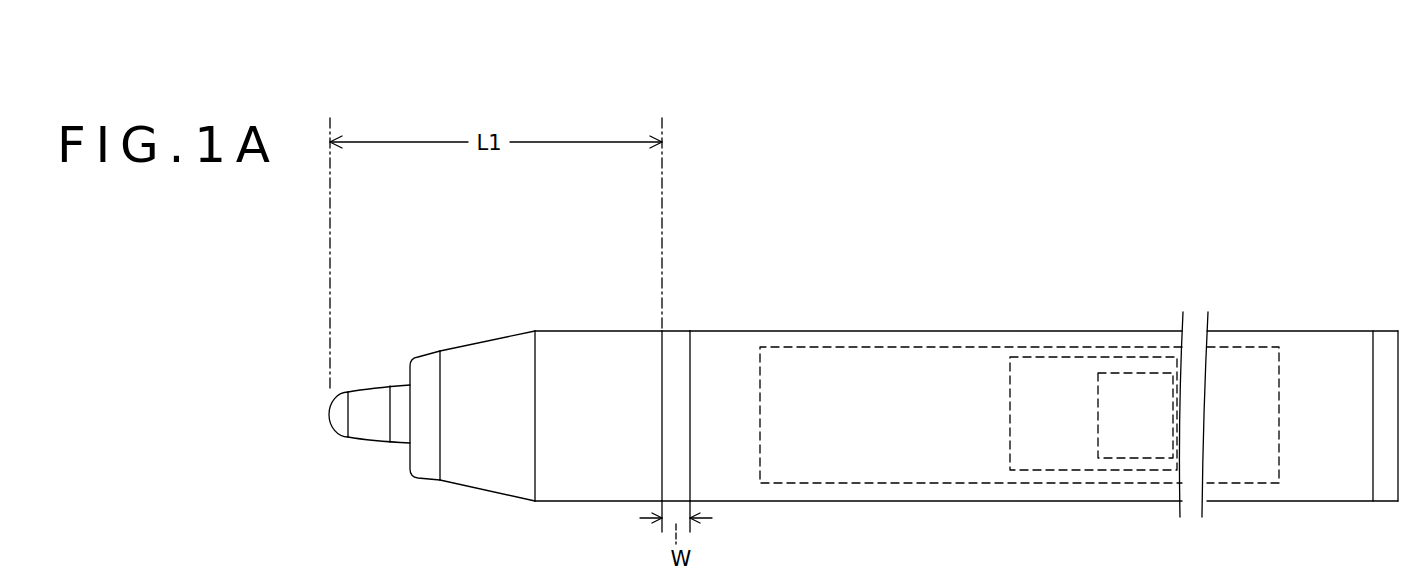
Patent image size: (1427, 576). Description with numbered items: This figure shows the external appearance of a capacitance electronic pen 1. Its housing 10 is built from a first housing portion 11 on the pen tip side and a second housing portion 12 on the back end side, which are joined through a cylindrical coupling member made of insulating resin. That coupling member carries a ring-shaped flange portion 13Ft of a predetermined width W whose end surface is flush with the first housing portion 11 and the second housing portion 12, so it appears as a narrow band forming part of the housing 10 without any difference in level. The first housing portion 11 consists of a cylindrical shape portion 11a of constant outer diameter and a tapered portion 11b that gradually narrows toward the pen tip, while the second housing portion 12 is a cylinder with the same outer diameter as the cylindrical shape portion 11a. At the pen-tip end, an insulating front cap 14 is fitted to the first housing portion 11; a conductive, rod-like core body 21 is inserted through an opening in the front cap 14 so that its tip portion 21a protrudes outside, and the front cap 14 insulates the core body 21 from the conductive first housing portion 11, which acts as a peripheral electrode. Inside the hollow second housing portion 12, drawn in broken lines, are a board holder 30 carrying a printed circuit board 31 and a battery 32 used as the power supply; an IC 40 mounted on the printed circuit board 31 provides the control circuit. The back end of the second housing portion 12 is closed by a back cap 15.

The capacitance electronic pen 1 is at (861, 322).
The housing 10 is at (522, 213).
The first housing portion 11 is at (472, 282).
The cylindrical shape portion 11a is at (590, 352).
The tapered portion 11b is at (489, 352).
The second housing portion 12 is at (740, 350).
The ring-shaped flange portion 13Ft is at (670, 350).
The front cap 14 is at (427, 355).
The back cap 15 is at (1385, 345).
The core body 21 is at (402, 430).
The tip portion 21a is at (342, 433).
The board holder 30 is at (963, 368).
The printed circuit board 31 is at (1049, 380).
The battery 32 is at (1238, 365).
The IC 40 is at (1134, 390).